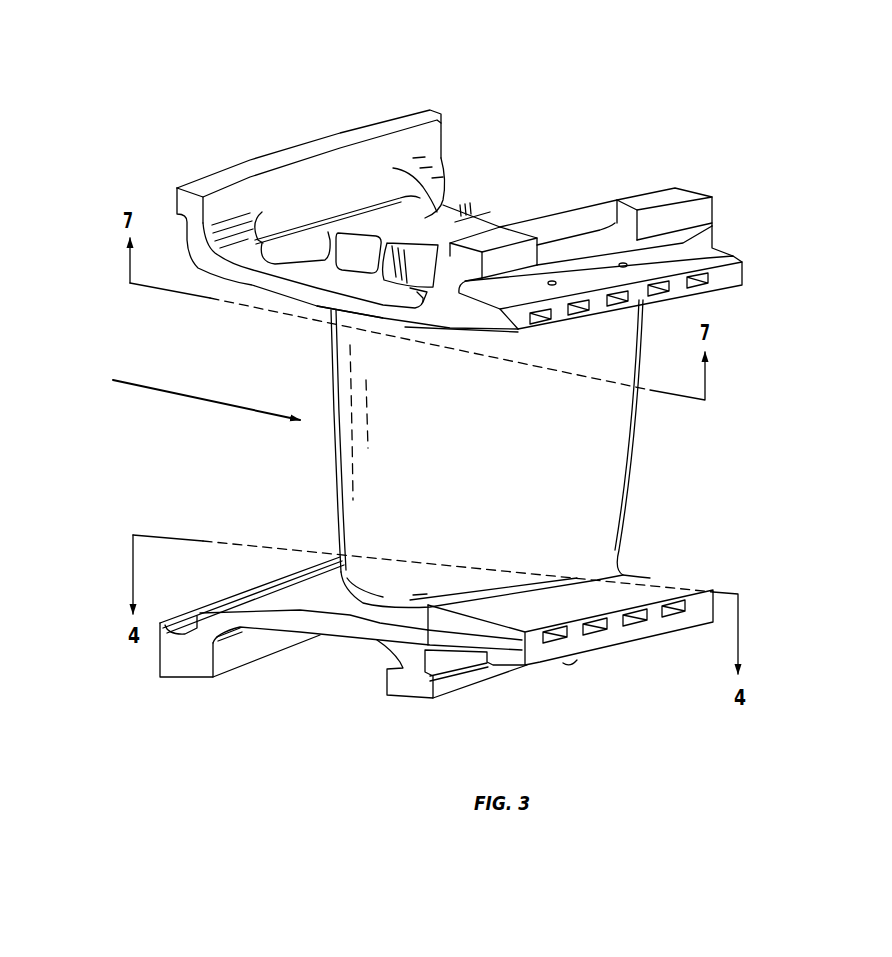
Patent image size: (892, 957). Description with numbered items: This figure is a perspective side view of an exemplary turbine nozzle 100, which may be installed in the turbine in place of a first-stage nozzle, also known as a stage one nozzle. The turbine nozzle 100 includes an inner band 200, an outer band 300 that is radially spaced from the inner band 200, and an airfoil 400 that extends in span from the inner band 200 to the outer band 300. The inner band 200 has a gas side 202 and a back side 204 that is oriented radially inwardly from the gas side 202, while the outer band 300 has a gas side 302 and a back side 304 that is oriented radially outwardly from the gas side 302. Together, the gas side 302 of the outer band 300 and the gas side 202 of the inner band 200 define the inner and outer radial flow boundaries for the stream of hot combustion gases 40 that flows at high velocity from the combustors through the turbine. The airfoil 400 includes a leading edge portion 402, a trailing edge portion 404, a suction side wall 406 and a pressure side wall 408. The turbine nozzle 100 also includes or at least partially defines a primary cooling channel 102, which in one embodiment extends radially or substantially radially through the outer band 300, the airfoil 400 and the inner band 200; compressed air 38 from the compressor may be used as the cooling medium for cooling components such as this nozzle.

The turbine nozzle 100 is at (634, 86).
The compressed air 38 is at (407, 260).
The back side 304 is at (424, 212).
The primary cooling channel 102 is at (420, 267).
The outer band 300 is at (234, 269).
The gas side 302 is at (311, 312).
The hot combustion gases 40 is at (177, 394).
The leading edge portion 402 is at (333, 458).
The airfoil 400 is at (511, 448).
The pressure side wall 408 is at (612, 432).
The trailing edge portion 404 is at (637, 493).
The suction side wall 406 is at (495, 505).
The gas side 202 is at (280, 597).
The inner band 200 is at (198, 652).
The back side 204 is at (360, 640).